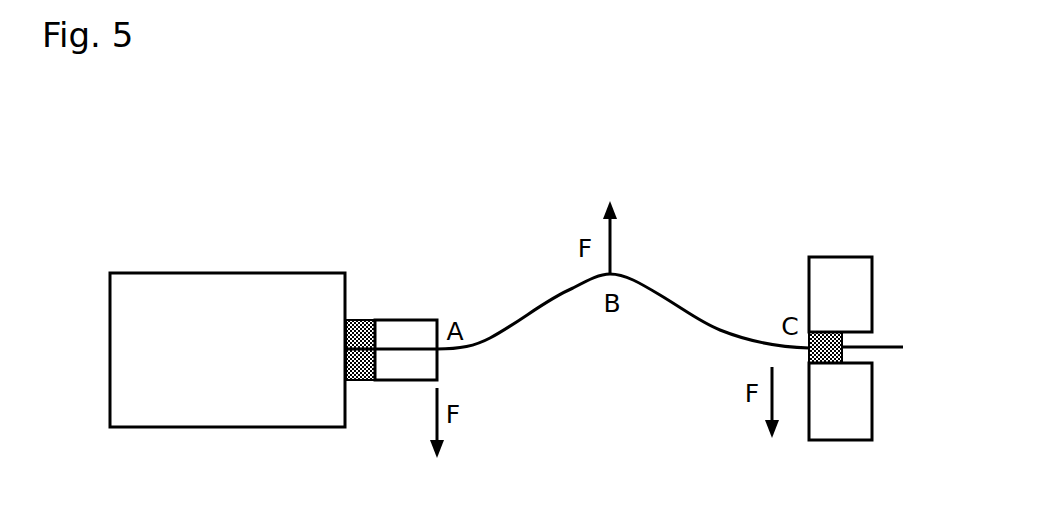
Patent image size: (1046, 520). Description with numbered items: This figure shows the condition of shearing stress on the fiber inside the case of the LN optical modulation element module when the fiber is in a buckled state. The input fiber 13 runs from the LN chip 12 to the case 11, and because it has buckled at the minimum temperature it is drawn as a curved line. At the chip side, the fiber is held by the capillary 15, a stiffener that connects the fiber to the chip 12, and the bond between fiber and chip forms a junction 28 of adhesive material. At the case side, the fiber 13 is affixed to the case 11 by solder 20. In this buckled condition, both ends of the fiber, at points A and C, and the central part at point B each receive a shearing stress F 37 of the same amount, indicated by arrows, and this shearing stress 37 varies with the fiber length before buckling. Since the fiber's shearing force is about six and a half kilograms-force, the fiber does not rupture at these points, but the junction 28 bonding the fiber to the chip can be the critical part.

The case 11 is at (840, 295).
The LN chip 12 is at (226, 349).
The input fiber 13 is at (707, 323).
The capillary 15 is at (408, 360).
The solder 20 is at (833, 360).
The junction 28 is at (369, 318).
The shearing stress F 37 is at (605, 341).